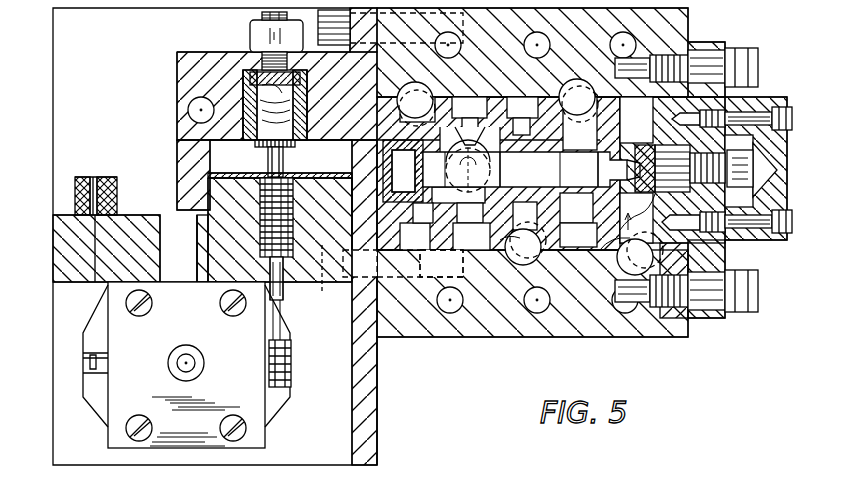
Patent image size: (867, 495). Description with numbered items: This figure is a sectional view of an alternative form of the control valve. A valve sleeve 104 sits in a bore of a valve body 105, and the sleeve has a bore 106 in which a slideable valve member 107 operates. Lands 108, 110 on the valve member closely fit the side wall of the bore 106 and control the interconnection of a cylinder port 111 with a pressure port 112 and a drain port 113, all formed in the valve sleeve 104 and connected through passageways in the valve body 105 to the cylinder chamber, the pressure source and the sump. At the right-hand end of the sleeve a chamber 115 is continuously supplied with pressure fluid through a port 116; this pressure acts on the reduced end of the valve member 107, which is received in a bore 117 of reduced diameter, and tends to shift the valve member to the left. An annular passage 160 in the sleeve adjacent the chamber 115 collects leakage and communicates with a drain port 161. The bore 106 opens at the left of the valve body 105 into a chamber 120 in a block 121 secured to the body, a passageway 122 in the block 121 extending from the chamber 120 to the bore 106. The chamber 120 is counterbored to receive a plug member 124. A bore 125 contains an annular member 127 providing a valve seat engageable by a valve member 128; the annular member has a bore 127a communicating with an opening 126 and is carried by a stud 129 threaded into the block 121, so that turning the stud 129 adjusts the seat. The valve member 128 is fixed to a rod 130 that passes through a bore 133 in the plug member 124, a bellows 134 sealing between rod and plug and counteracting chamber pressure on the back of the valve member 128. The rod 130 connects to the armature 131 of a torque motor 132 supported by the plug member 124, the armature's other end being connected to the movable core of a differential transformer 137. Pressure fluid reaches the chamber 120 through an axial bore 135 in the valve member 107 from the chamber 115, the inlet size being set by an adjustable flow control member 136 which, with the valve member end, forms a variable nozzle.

The valve sleeve 104 is at (491, 94).
The valve body 105 is at (641, 337).
The bore 106 is at (378, 150).
The slideable valve member 107 is at (542, 158).
The land 108 is at (391, 156).
The land 110 is at (513, 156).
The cylinder port 111 is at (423, 179).
The pressure port 112 is at (515, 270).
The drain port 113 is at (430, 86).
The chamber 115 is at (650, 232).
The port 116 is at (618, 263).
The bore of reduced diameter 117 is at (604, 161).
The chamber 120 is at (215, 148).
The block 121 is at (177, 70).
The passageway 122 is at (290, 168).
The plug member 124 is at (208, 205).
The bore 125 is at (243, 120).
The opening 126 is at (306, 93).
The annular member 127 is at (189, 103).
The bore 127a is at (305, 112).
The valve member 128 is at (250, 138).
The stud 129 is at (303, 62).
The rod 130 is at (266, 158).
The armature 131 is at (294, 365).
The torque motor 132 is at (268, 440).
The bore 133 is at (292, 293).
The bellows 134 is at (296, 220).
The axial bore 135 is at (524, 177).
The flow control member 136 is at (666, 145).
The differential transformer 137 is at (111, 162).
The annular passage 160 is at (566, 210).
The drain port 161 is at (597, 58).